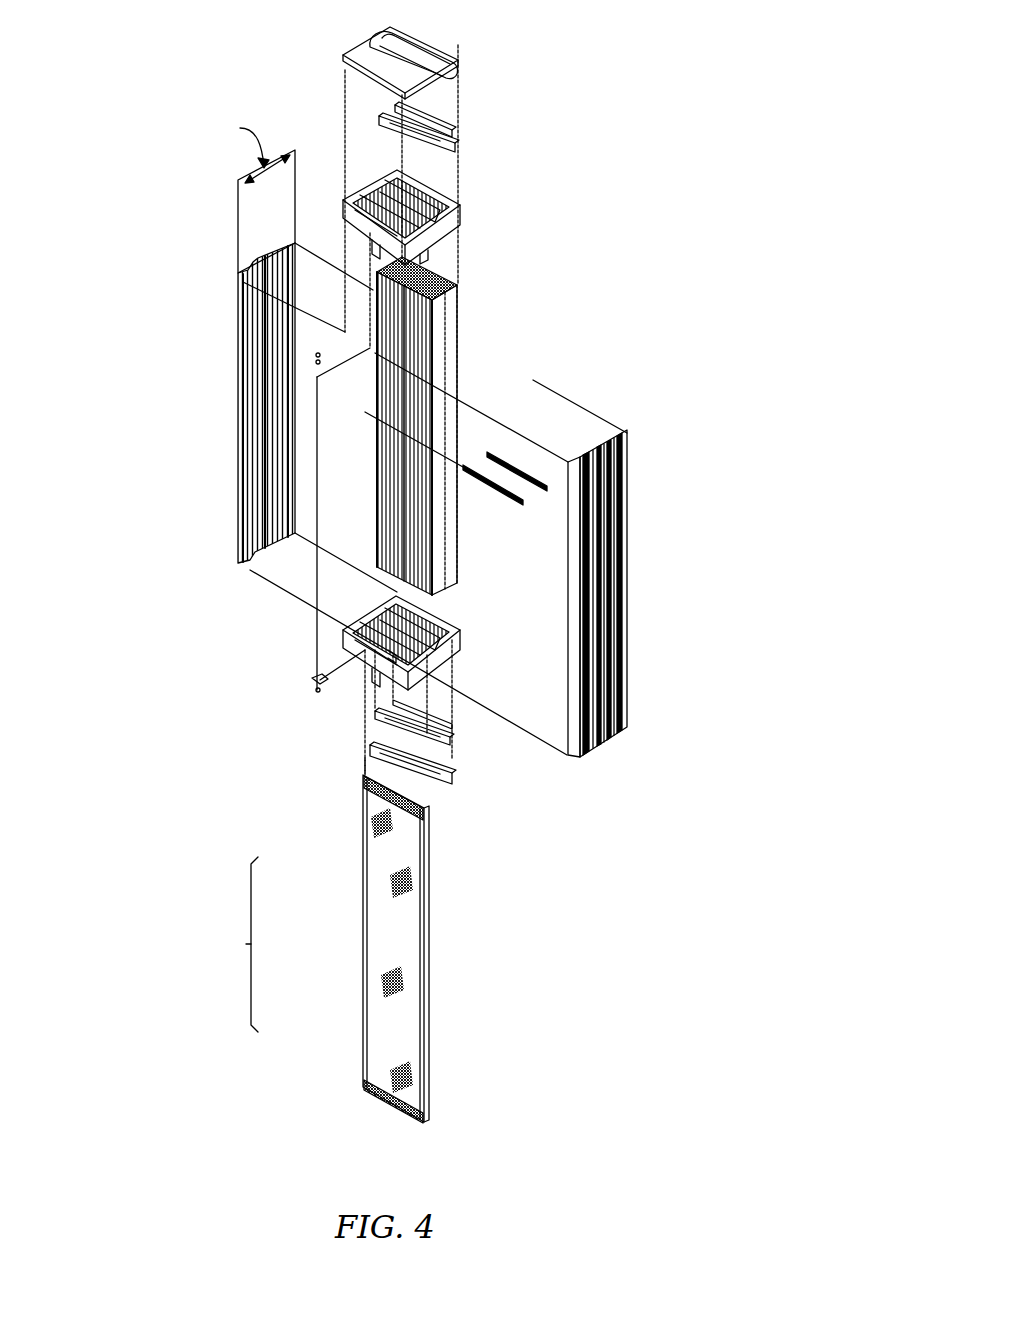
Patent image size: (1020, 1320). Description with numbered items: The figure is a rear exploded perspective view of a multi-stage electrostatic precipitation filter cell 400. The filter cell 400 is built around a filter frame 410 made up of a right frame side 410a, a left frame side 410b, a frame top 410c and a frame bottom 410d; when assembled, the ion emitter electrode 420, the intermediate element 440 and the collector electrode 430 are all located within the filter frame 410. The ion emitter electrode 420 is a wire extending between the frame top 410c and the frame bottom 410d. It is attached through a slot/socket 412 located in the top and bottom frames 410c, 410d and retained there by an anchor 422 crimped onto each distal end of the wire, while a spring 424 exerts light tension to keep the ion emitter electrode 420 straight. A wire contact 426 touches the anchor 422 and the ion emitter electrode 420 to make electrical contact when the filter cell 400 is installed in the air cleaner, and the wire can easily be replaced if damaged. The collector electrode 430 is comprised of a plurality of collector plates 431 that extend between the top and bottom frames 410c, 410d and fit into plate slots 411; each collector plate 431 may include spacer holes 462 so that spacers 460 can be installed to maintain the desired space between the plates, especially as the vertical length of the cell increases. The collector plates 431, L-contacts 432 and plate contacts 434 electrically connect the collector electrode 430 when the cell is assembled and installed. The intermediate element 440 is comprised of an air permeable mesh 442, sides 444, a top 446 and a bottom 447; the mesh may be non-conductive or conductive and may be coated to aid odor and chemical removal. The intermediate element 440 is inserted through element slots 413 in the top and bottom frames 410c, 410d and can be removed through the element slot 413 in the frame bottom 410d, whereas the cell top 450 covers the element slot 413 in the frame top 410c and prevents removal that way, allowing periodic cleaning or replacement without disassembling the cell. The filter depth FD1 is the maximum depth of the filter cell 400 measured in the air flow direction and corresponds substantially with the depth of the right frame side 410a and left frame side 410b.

The multi-stage electrostatic precipitation filter cell 400 is at (650, 63).
The filter frame 410 is at (510, 465).
The right frame side 410a is at (238, 298).
The left frame side 410b is at (630, 680).
The frame top 410c is at (445, 192).
The frame bottom 410d is at (450, 615).
The plate slots 411 is at (445, 232).
The slot/socket 412 is at (405, 252).
The element slots 413 is at (358, 610).
The ion emitter electrode 420 is at (345, 553).
The anchor 422 is at (318, 353).
The spring 424 is at (318, 362).
The wire contact 426 is at (317, 680).
The collector electrode 430 is at (455, 325).
The collector plates 431 is at (412, 347).
The L-contacts 432 is at (442, 152).
The plate contacts 434 is at (440, 782).
The intermediate element 440 is at (222, 944).
The air permeable mesh 442 is at (375, 986).
The sides 444 is at (422, 937).
The top 446 is at (363, 779).
The bottom 447 is at (373, 1100).
The cell top 450 is at (367, 45).
The spacers 460 is at (490, 467).
The spacer holes 462 is at (455, 437).
The filter depth FD1 is at (241, 195).